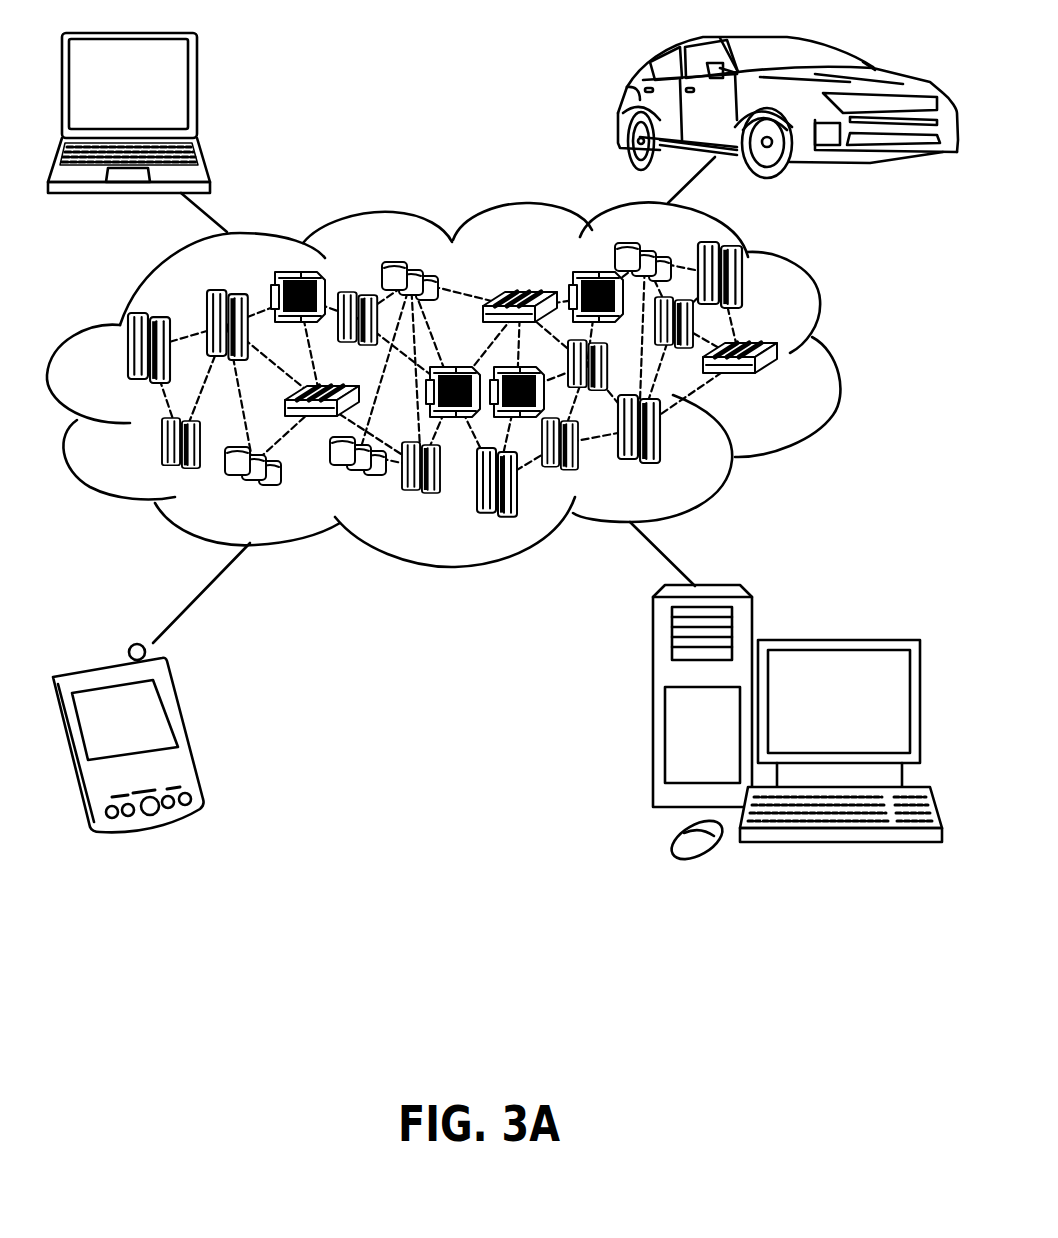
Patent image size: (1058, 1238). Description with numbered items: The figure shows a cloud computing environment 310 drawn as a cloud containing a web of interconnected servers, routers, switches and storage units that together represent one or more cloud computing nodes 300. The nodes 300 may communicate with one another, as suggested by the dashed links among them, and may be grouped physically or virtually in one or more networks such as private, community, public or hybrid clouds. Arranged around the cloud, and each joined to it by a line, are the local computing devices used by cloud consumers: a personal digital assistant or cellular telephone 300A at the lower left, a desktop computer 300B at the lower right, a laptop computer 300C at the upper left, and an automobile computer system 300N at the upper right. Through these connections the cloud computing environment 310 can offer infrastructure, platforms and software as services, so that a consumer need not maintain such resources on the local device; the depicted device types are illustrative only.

The cloud computing nodes 300 is at (522, 400).
The cloud computing environment 310 is at (838, 350).
The personal digital assistant (PDA) or cellular telephone 300A is at (185, 732).
The desktop computer 300B is at (835, 640).
The laptop computer 300C is at (197, 92).
The automobile computer system 300N is at (621, 106).